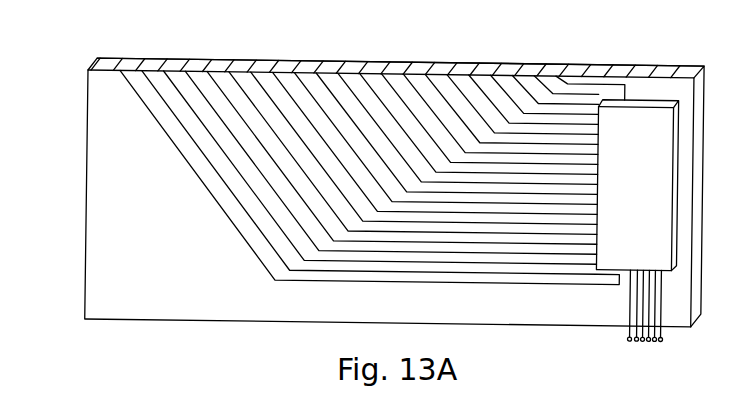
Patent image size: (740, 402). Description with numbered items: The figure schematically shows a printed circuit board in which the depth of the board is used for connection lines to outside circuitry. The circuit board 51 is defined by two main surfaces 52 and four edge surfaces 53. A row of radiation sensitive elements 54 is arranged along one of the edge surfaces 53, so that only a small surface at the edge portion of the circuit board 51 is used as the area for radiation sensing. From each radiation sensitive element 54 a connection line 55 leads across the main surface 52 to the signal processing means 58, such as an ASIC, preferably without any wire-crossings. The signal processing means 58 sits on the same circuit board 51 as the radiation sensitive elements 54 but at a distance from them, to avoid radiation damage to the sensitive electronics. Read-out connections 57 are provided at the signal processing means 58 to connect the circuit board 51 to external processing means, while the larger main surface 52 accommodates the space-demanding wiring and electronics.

The circuit board 51 is at (87, 89).
The main surface 52 is at (110, 185).
The edge surface 53 is at (676, 67).
The radiation sensitive element 54 is at (461, 64).
The connection line 55 is at (229, 222).
The read-out connection 57 is at (630, 339).
The signal processing means 58 is at (648, 179).